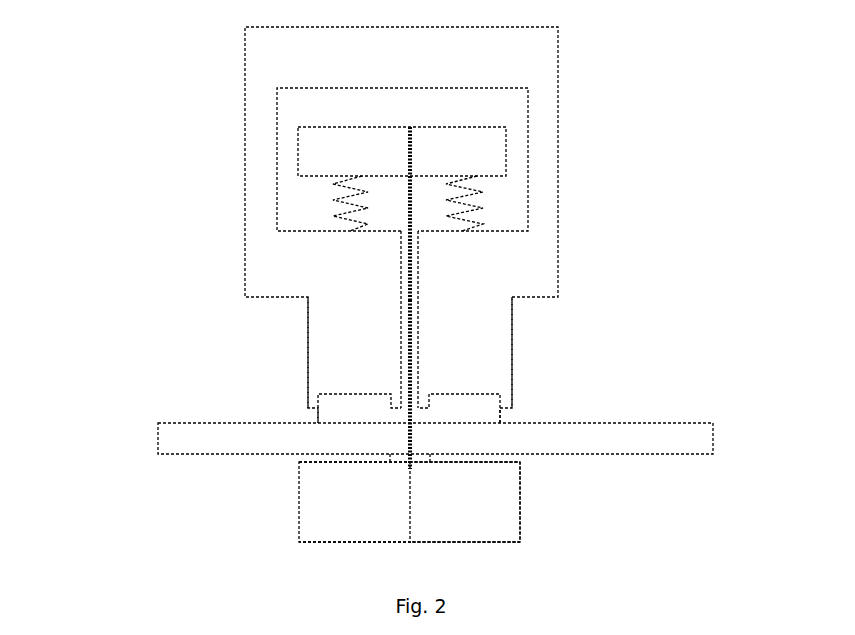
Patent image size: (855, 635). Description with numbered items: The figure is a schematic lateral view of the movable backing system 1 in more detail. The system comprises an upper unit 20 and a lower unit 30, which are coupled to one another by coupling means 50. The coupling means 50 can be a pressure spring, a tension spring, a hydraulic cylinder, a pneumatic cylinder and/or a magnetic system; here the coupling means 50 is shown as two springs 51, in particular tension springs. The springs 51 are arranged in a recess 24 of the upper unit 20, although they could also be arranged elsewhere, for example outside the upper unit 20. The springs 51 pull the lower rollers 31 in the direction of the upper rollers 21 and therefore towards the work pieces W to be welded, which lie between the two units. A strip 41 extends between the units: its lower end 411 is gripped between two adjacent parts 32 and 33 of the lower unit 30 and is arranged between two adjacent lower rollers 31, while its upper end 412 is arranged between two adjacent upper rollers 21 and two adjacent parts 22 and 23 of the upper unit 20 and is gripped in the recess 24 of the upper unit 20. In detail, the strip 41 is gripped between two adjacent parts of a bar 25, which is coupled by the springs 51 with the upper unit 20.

The movable backing system 1 is at (122, 104).
The upper unit 20 is at (258, 280).
The upper rollers 21 is at (335, 408).
The part of the upper unit 22 is at (335, 343).
The part of the upper unit 23 is at (468, 372).
The recess 24 is at (312, 101).
The bar 25 is at (465, 160).
The lower unit 30 is at (433, 517).
The lower rollers 31 is at (335, 457).
The part of the lower unit 32 is at (340, 488).
The part of the lower unit 33 is at (490, 523).
The strip 41 is at (520, 267).
The lower end of the strip 411 is at (412, 471).
The upper end of the strip 412 is at (413, 127).
The coupling means 50 is at (340, 202).
The springs 51 is at (458, 207).
The work pieces W is at (166, 438).